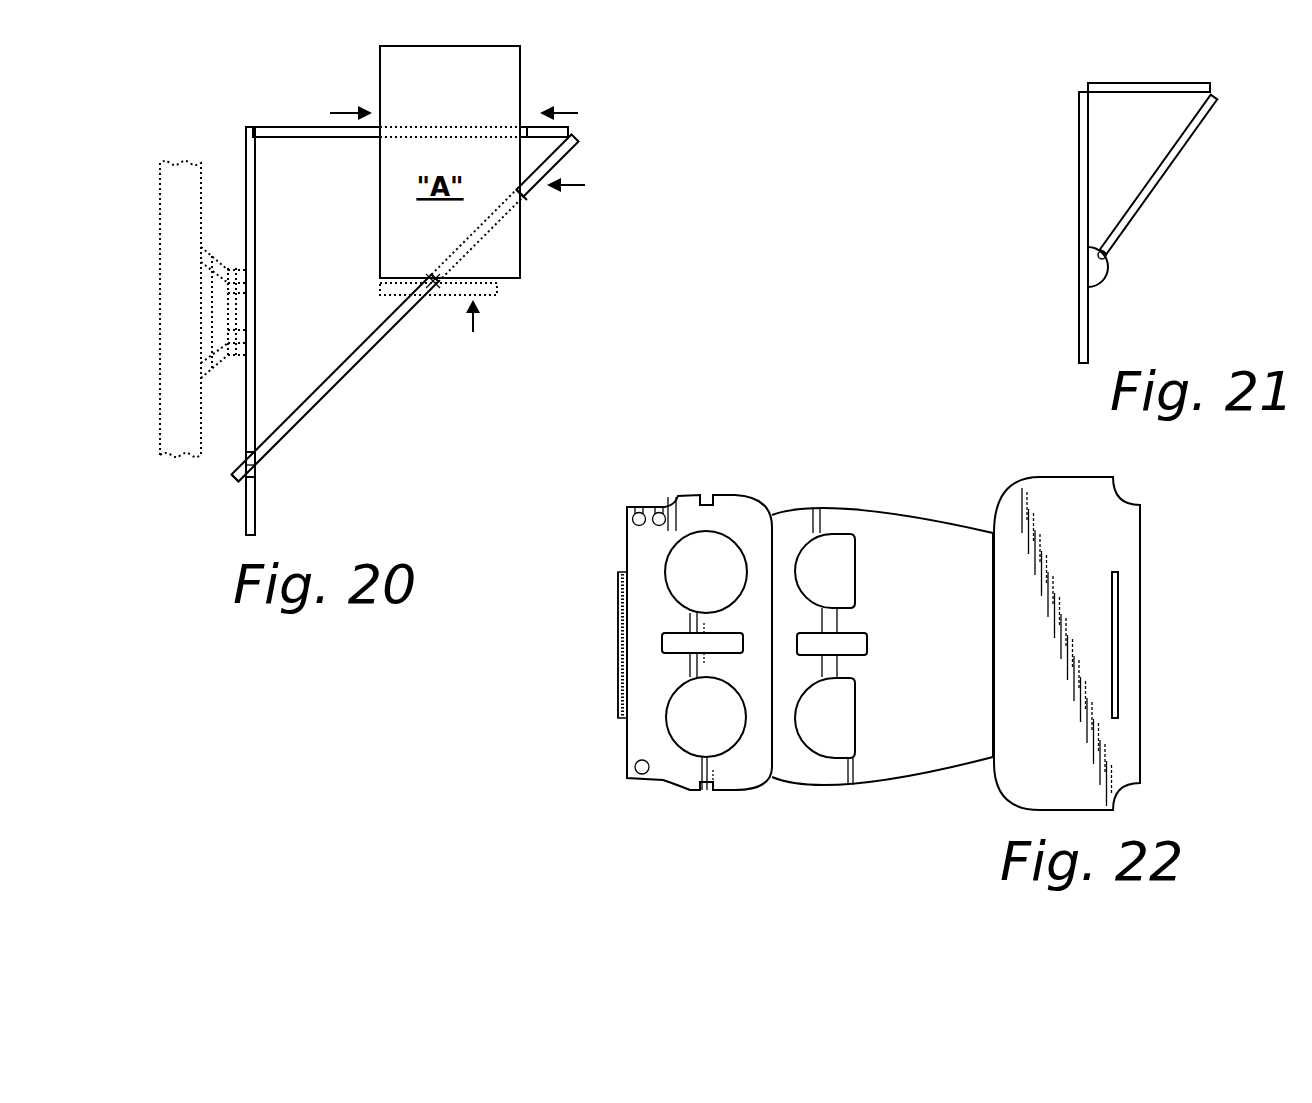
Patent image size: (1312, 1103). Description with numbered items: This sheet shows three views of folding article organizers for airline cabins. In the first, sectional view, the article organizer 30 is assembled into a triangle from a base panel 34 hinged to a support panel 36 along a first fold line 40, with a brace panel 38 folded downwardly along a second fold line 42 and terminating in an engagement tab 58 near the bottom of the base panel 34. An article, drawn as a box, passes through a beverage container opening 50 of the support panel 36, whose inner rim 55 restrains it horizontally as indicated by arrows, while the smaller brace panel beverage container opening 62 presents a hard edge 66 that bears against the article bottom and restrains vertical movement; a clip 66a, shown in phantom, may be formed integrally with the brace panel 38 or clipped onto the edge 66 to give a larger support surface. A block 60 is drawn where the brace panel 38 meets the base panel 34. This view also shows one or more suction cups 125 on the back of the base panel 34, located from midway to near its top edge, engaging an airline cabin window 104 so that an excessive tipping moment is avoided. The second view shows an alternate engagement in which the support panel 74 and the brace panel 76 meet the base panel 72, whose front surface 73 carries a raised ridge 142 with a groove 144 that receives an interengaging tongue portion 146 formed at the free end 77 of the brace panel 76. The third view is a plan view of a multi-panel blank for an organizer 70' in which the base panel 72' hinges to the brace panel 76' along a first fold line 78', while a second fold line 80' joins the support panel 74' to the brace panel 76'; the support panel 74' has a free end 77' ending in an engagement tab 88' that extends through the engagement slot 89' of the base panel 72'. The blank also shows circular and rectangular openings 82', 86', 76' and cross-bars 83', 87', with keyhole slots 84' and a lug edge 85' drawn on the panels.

In FIG. 20, the article organizer 30 is at (345, 397).
In FIG. 20, the base panel 34 is at (255, 226).
In FIG. 20, the support panel 36 is at (290, 128).
In FIG. 20, the brace panel 38 is at (378, 338).
In FIG. 20, the first fold line 40 is at (250, 130).
In FIG. 20, the second fold line 42 is at (580, 142).
In FIG. 20, the beverage container opening 50 is at (525, 128).
In FIG. 20, the inner rim 55 is at (377, 127).
In FIG. 20, the engagement tab 58 is at (235, 481).
In FIG. 20, the lower block 60 is at (256, 472).
In FIG. 20, the brace panel beverage container opening 62 is at (530, 200).
In FIG. 20, the hard edge 66 is at (434, 286).
In FIG. 20, the clip 66a is at (397, 291).
In FIG. 20, the airline cabin window 104 is at (178, 352).
In FIG. 20, the suction cup 125 is at (228, 313).
In FIG. 21, the base panel 72 is at (1030, 227).
In FIG. 21, the front surface 73 is at (1089, 315).
In FIG. 21, the support panel 74 is at (1150, 64).
In FIG. 21, the brace panel 76 is at (1194, 175).
In FIG. 21, the free end 77 is at (1118, 179).
In FIG. 21, the ridge 142 is at (1102, 275).
In FIG. 21, the groove 144 is at (1097, 263).
In FIG. 21, the tongue portion 146 is at (1106, 255).
In FIG. 22, the organizer 70' is at (565, 648).
In FIG. 22, the base panel 72' is at (1067, 643).
In FIG. 22, the support panel 74' is at (712, 605).
In FIG. 22, the brace panel 76' is at (825, 731).
In FIG. 22, the free end 77' is at (564, 645).
In FIG. 22, the first fold line 78' is at (965, 686).
In FIG. 22, the second fold line 80' is at (877, 695).
In FIG. 22, the lower circular boss 82' is at (706, 643).
In FIG. 22, the cross bar 83' is at (634, 605).
In FIG. 22, the keyhole slots 84' is at (663, 692).
In FIG. 22, the lug edge 85' is at (893, 530).
In FIG. 22, the upper lug 86' is at (825, 557).
In FIG. 22, the cross bar 87' is at (876, 641).
In FIG. 22, the engagement tab 88' is at (566, 645).
In FIG. 22, the engagement slot 89' is at (1174, 645).